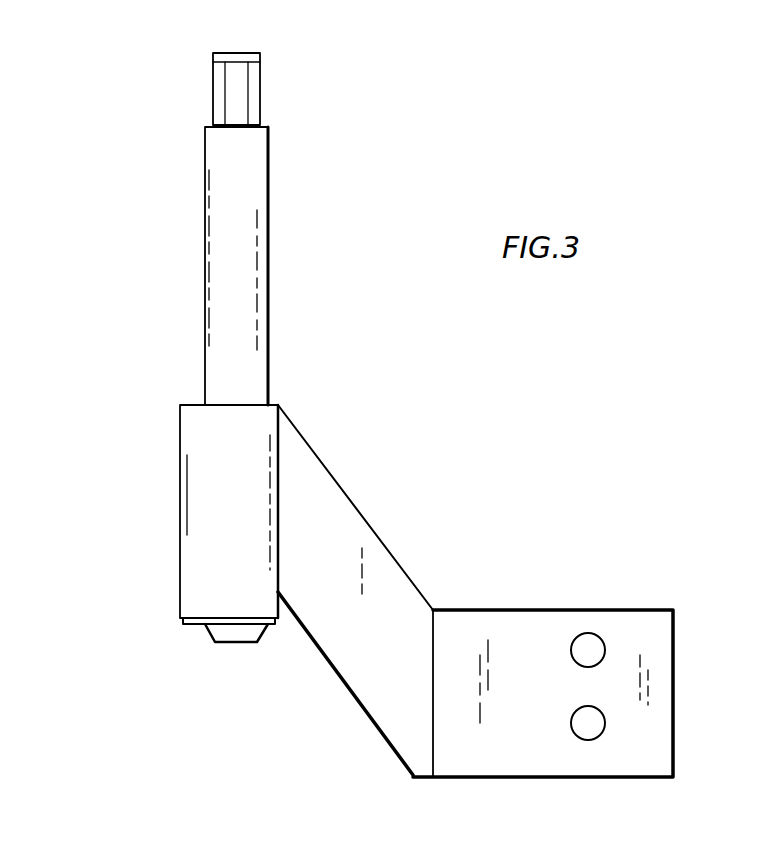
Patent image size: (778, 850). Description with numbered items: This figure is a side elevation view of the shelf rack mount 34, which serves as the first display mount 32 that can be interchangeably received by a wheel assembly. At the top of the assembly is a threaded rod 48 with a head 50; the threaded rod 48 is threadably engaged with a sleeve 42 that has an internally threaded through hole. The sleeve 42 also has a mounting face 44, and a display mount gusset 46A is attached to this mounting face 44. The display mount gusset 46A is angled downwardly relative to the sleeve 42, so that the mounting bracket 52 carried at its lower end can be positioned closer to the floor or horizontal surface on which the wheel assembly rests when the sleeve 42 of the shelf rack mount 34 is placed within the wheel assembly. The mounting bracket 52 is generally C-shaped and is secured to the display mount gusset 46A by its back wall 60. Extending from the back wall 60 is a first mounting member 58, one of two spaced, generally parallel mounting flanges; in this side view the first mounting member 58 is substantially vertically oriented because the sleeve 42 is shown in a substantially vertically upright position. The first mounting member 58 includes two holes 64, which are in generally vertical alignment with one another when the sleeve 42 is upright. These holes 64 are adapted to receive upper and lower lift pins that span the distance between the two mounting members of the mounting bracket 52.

The first display mount 32 is at (138, 392).
The shelf rack mount 34 is at (172, 589).
The sleeve 42 is at (215, 505).
The mounting face 44 is at (280, 448).
The display mount gusset 46A is at (352, 535).
The threaded rod 48 is at (247, 203).
The head 50 is at (260, 85).
The mounting bracket 52 is at (548, 598).
The first mounting member 58 is at (490, 633).
The back wall 60 is at (433, 655).
The holes 64 is at (605, 718).